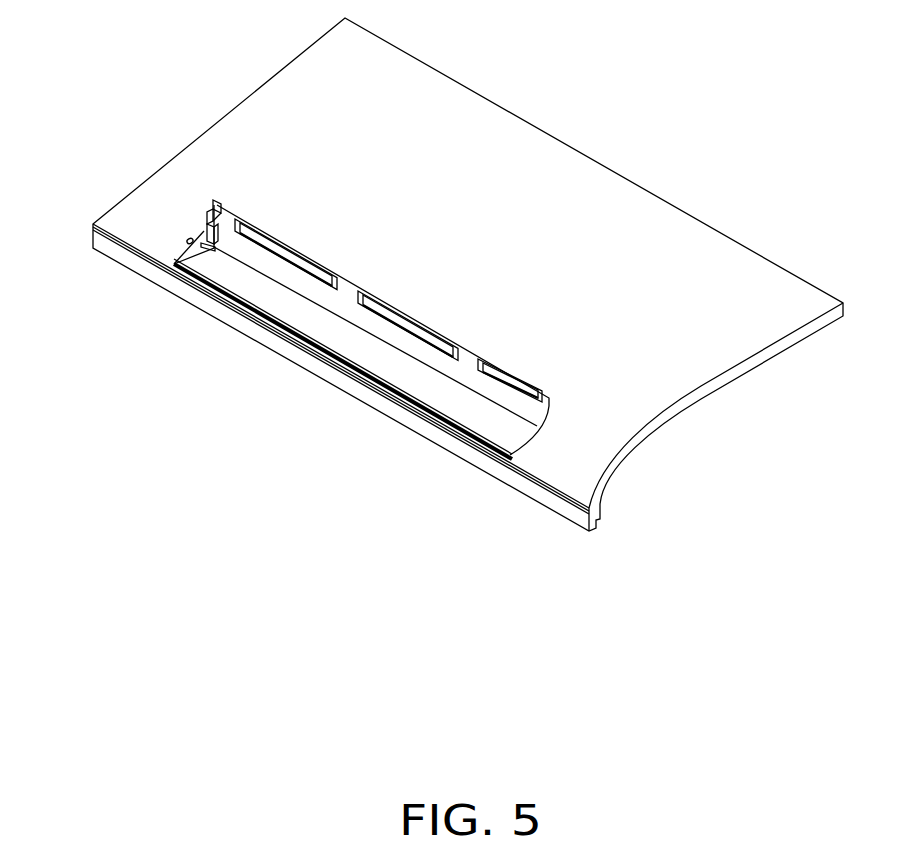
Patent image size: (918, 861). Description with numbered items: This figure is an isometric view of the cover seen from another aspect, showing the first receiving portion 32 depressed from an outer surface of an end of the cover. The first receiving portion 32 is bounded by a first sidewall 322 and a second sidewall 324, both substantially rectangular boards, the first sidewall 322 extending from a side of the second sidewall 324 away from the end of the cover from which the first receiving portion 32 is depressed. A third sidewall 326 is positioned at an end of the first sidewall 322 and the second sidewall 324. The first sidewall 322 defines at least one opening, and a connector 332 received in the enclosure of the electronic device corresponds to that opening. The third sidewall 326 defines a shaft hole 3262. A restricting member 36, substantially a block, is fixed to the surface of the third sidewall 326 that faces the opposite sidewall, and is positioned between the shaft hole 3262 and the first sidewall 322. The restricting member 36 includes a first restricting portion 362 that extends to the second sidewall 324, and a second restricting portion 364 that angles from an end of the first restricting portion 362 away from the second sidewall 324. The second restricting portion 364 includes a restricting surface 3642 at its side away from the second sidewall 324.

The first receiving portion 32 is at (443, 388).
The first sidewall 322 is at (342, 298).
The second sidewall 324 is at (360, 352).
The third sidewall 326 is at (197, 252).
The shaft hole 3262 is at (186, 239).
The connector 332 is at (290, 254).
The restricting member 36 is at (128, 150).
The first restricting portion 362 is at (203, 243).
The second restricting portion 364 is at (207, 228).
The restricting surface 3642 is at (216, 202).